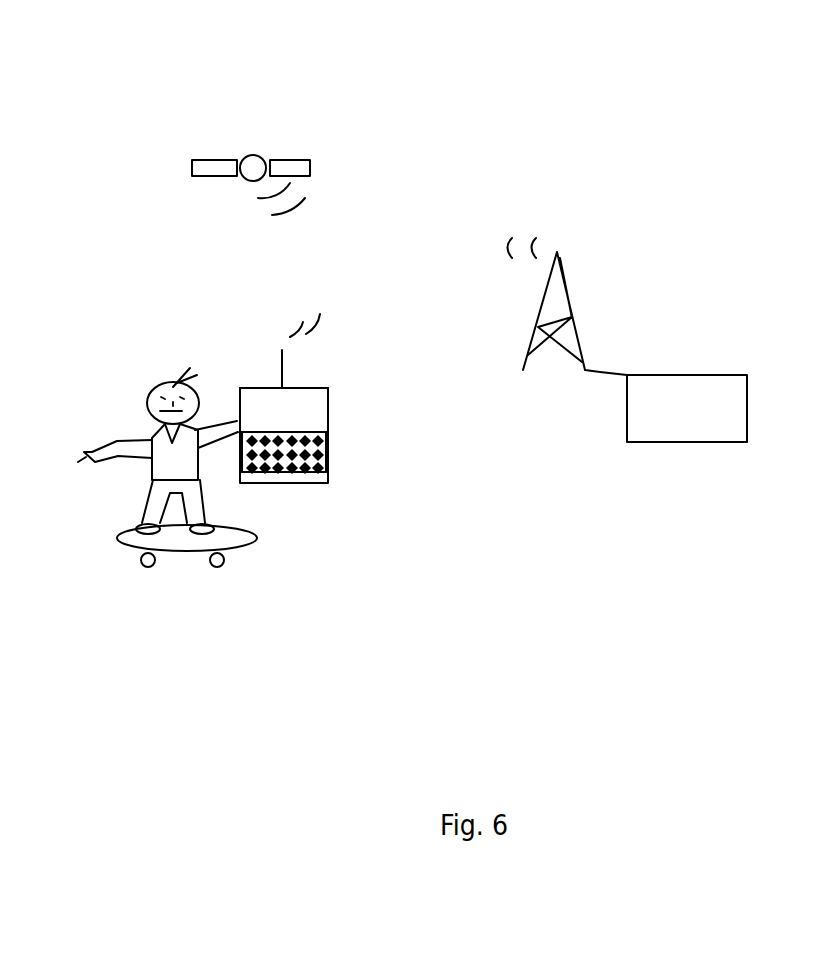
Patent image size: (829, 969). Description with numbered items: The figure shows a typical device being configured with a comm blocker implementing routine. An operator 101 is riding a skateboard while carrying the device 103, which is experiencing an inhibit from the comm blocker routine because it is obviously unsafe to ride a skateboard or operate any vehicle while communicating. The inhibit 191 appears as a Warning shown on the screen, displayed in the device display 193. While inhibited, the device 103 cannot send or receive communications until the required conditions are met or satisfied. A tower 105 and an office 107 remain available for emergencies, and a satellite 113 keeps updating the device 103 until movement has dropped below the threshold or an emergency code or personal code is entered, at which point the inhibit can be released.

The operator 101 is at (145, 387).
The device 103 is at (265, 390).
The satellite 113 is at (250, 157).
The inhibit 191 is at (308, 383).
The device display 193 is at (328, 403).
The tower 105 is at (567, 280).
The office 107 is at (687, 375).